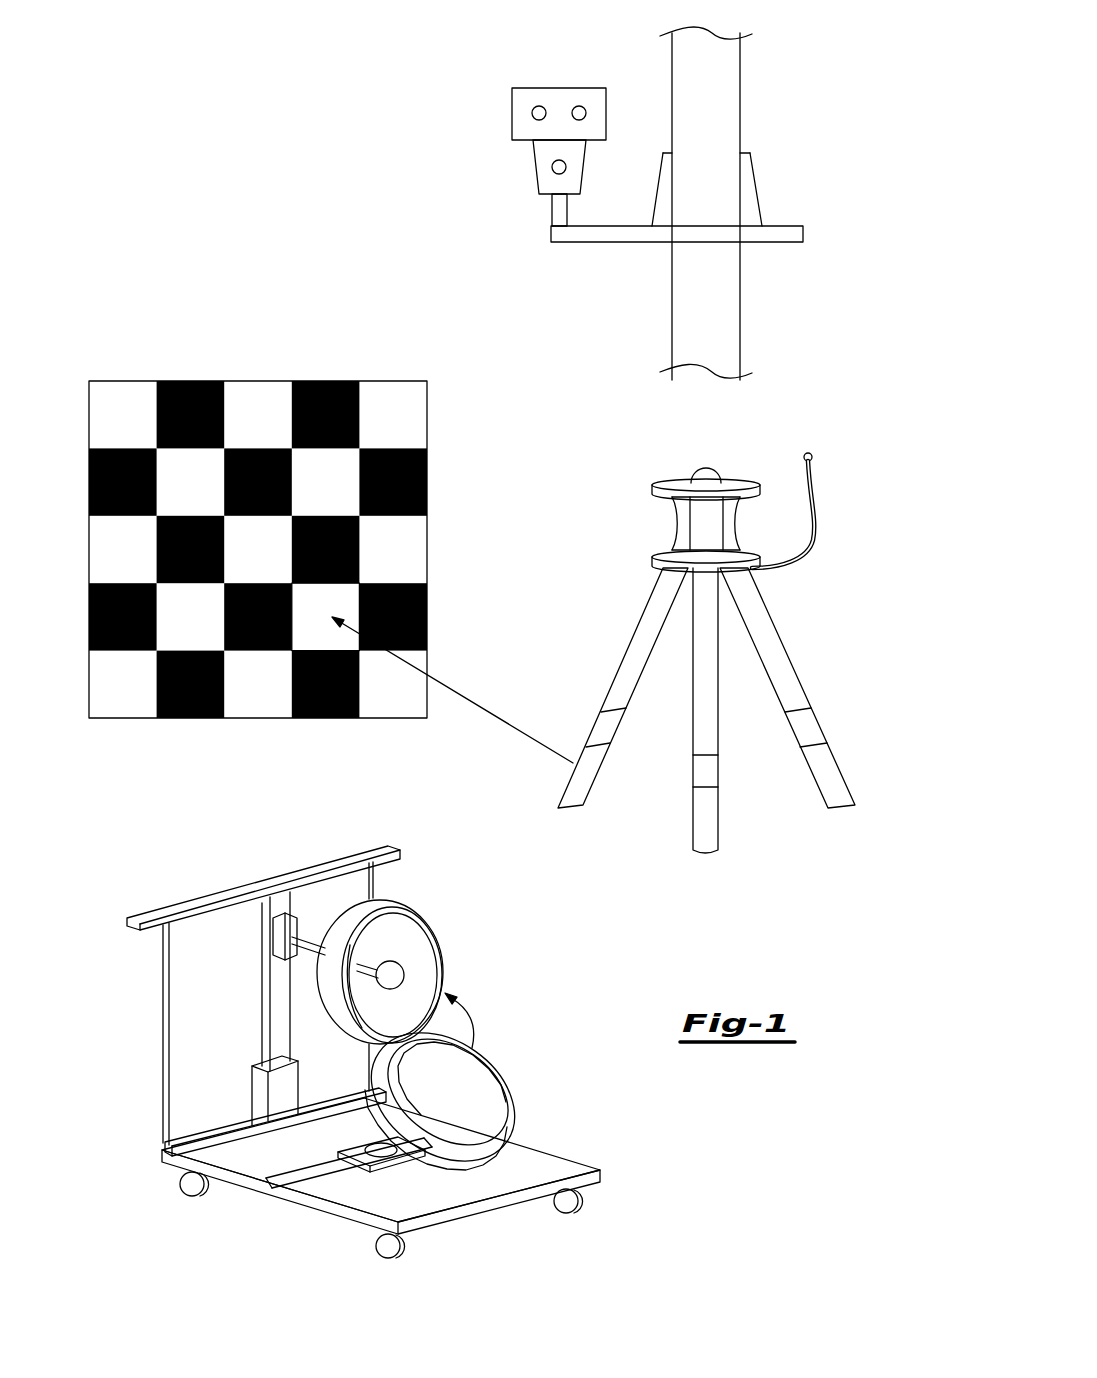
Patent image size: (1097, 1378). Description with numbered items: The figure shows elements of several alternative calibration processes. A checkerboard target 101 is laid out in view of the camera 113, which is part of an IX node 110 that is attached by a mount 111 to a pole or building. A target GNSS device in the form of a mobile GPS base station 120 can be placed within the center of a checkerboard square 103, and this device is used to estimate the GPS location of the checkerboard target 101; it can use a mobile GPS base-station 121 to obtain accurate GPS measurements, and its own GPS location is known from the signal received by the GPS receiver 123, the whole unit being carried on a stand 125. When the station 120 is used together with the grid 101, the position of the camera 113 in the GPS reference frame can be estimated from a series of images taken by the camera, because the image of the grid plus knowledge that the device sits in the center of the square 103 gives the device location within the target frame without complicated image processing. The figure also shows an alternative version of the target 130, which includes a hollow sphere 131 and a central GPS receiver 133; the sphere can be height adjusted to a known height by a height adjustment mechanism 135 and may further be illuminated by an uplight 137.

The checkerboard target 101 is at (400, 414).
The checkerboard square 103 is at (343, 603).
The IX node 110 is at (779, 259).
The mount 111 is at (642, 243).
The camera 113 is at (512, 113).
The mobile GPS base station 120 is at (728, 637).
The mobile GPS base-station 121 is at (705, 465).
The GPS receiver 123 is at (812, 483).
The stand 125 is at (712, 823).
The target 130 is at (397, 1040).
The hollow sphere 131 is at (357, 923).
The central GPS receiver 133 is at (408, 973).
The height adjustment mechanism 135 is at (258, 1090).
The uplight 137 is at (373, 1158).